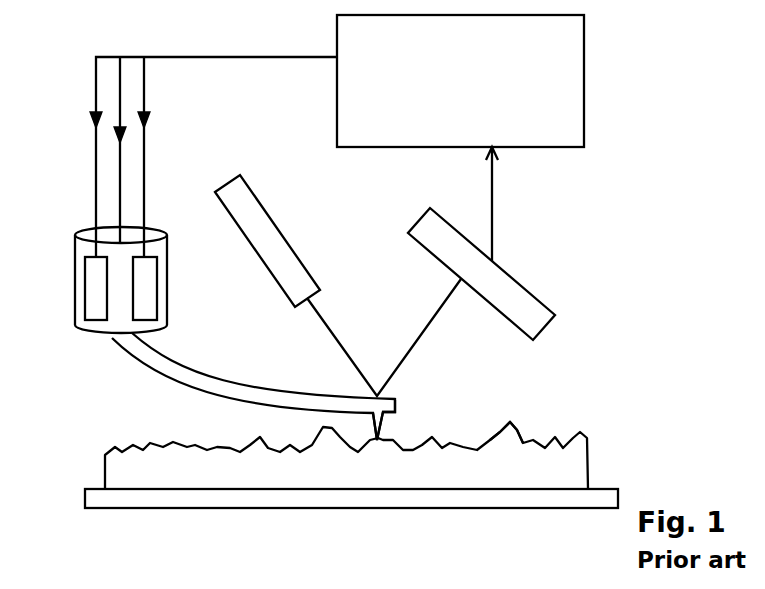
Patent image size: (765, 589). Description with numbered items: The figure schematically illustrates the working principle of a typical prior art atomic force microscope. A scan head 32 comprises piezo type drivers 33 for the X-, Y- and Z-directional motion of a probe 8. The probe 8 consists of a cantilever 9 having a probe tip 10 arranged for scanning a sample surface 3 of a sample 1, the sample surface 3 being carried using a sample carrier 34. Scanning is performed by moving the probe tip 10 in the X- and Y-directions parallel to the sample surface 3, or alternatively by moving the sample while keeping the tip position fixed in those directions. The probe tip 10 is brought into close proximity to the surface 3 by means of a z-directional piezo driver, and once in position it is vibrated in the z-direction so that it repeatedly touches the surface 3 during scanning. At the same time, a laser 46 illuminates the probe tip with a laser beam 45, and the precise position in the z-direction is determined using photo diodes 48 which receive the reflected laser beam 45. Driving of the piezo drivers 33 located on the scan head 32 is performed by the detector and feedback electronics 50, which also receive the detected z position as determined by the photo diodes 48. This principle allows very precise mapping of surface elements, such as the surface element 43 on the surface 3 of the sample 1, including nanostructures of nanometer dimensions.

The sample 1 is at (317, 432).
The sample surface 3 is at (207, 448).
The probe 8 is at (263, 385).
The cantilever 9 is at (229, 387).
The probe tip 10 is at (393, 425).
The scan head 32 is at (73, 258).
The piezo type drivers 33 is at (88, 298).
The sample carrier 34 is at (250, 509).
The surface element 43 is at (512, 422).
The laser beam 45 is at (338, 326).
The laser 46 is at (295, 238).
The photo diodes 48 is at (410, 226).
The detector and feedback electronics 50 is at (584, 78).